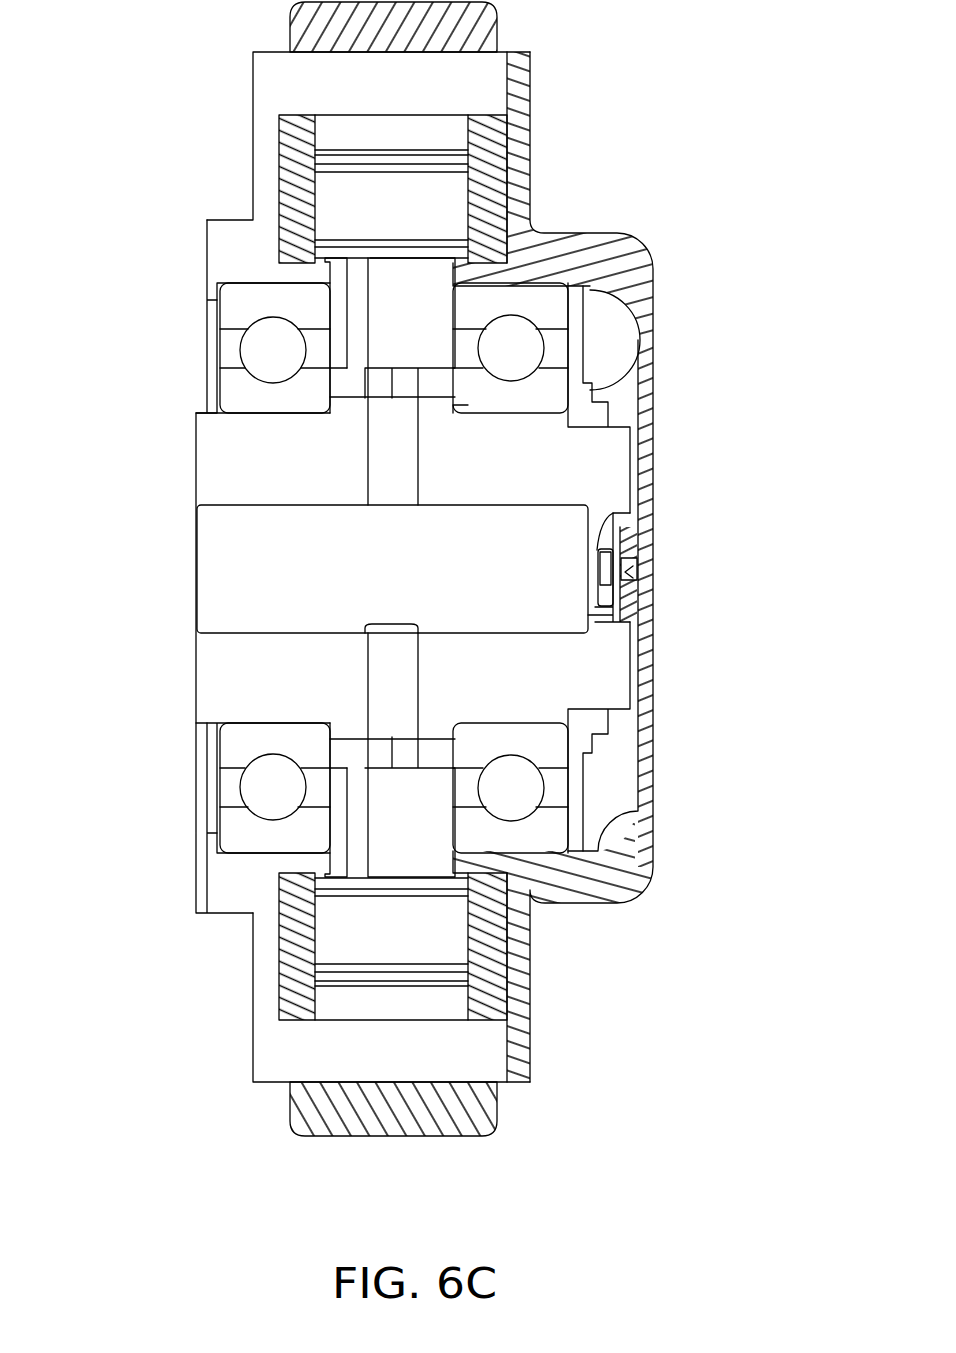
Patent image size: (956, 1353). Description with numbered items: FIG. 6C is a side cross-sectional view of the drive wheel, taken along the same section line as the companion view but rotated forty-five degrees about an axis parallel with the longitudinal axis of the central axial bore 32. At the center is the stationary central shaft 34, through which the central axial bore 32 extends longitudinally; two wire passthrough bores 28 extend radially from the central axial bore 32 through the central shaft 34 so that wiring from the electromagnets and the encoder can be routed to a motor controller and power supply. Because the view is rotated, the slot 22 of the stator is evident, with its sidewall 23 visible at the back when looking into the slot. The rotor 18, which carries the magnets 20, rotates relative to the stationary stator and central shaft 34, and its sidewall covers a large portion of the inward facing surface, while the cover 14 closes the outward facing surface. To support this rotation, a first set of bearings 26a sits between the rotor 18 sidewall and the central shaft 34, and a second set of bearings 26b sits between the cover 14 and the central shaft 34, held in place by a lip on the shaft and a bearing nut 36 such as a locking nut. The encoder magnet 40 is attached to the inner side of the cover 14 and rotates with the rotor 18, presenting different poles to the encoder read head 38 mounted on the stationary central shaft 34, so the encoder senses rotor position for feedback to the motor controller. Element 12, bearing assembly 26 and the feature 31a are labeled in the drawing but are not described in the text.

The fastener head 12 is at (307, 27).
The cover 14 is at (643, 882).
The rotor 18 is at (288, 80).
The magnets 20 is at (340, 135).
The slot 22 is at (340, 188).
The sidewall 23 is at (420, 222).
The bearing assembly 26 is at (213, 298).
The first set of bearings 26a is at (237, 308).
The second set of bearings 26b is at (337, 440).
The wire passthrough bore 28 is at (383, 468).
The bearing seat 31a is at (458, 403).
The central axial bore 32 is at (345, 580).
The central shaft 34 is at (210, 423).
The bearing nut 36 is at (597, 397).
The encoder read head 38 is at (618, 513).
The encoder magnet 40 is at (655, 578).